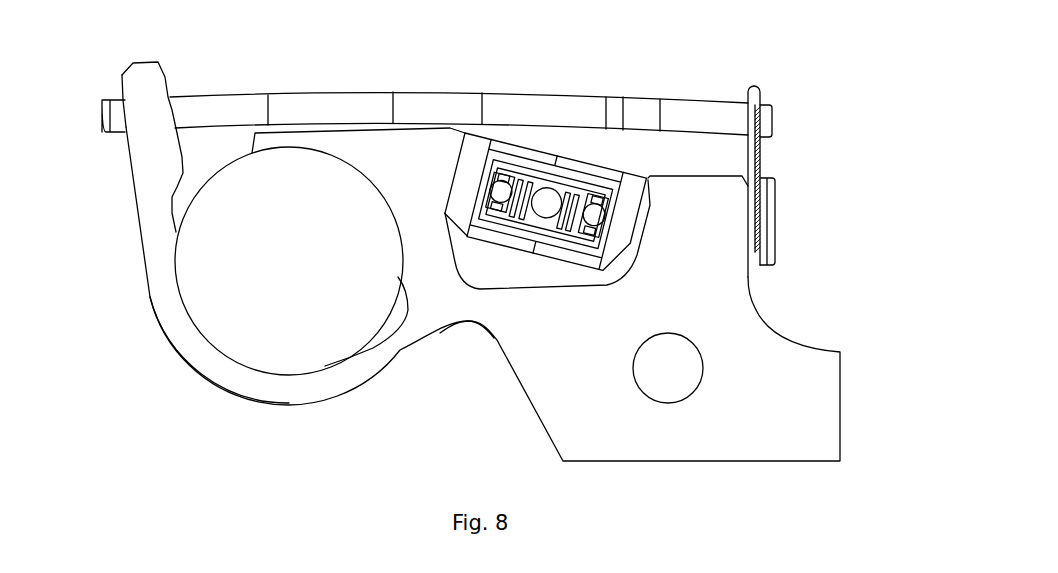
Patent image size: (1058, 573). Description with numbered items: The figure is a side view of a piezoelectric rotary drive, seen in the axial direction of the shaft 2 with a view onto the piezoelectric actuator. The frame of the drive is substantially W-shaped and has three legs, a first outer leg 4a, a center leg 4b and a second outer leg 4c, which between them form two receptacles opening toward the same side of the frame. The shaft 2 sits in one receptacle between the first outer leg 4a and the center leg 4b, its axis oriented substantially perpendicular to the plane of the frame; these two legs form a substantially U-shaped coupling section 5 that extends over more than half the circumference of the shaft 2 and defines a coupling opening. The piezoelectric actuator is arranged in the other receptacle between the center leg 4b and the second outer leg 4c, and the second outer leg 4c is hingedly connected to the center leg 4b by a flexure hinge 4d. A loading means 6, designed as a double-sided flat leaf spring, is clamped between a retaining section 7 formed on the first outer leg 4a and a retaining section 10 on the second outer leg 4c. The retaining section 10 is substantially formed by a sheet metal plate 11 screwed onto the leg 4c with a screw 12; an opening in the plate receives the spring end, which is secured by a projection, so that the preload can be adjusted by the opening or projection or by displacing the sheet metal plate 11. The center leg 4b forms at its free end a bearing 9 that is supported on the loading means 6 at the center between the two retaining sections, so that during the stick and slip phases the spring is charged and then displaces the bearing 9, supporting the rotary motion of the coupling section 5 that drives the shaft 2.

The shaft 2 is at (297, 279).
The first outer leg 4a is at (182, 330).
The center leg 4b is at (428, 298).
The second outer leg 4c is at (723, 316).
The flexure hinge 4d is at (473, 300).
The coupling section 5 is at (315, 470).
The loading means 6 is at (315, 72).
The retaining section 7 is at (143, 103).
The bearing 9 is at (439, 162).
The retaining section 10 is at (799, 78).
The sheet metal plate 11 is at (760, 155).
The screw 12 is at (768, 233).